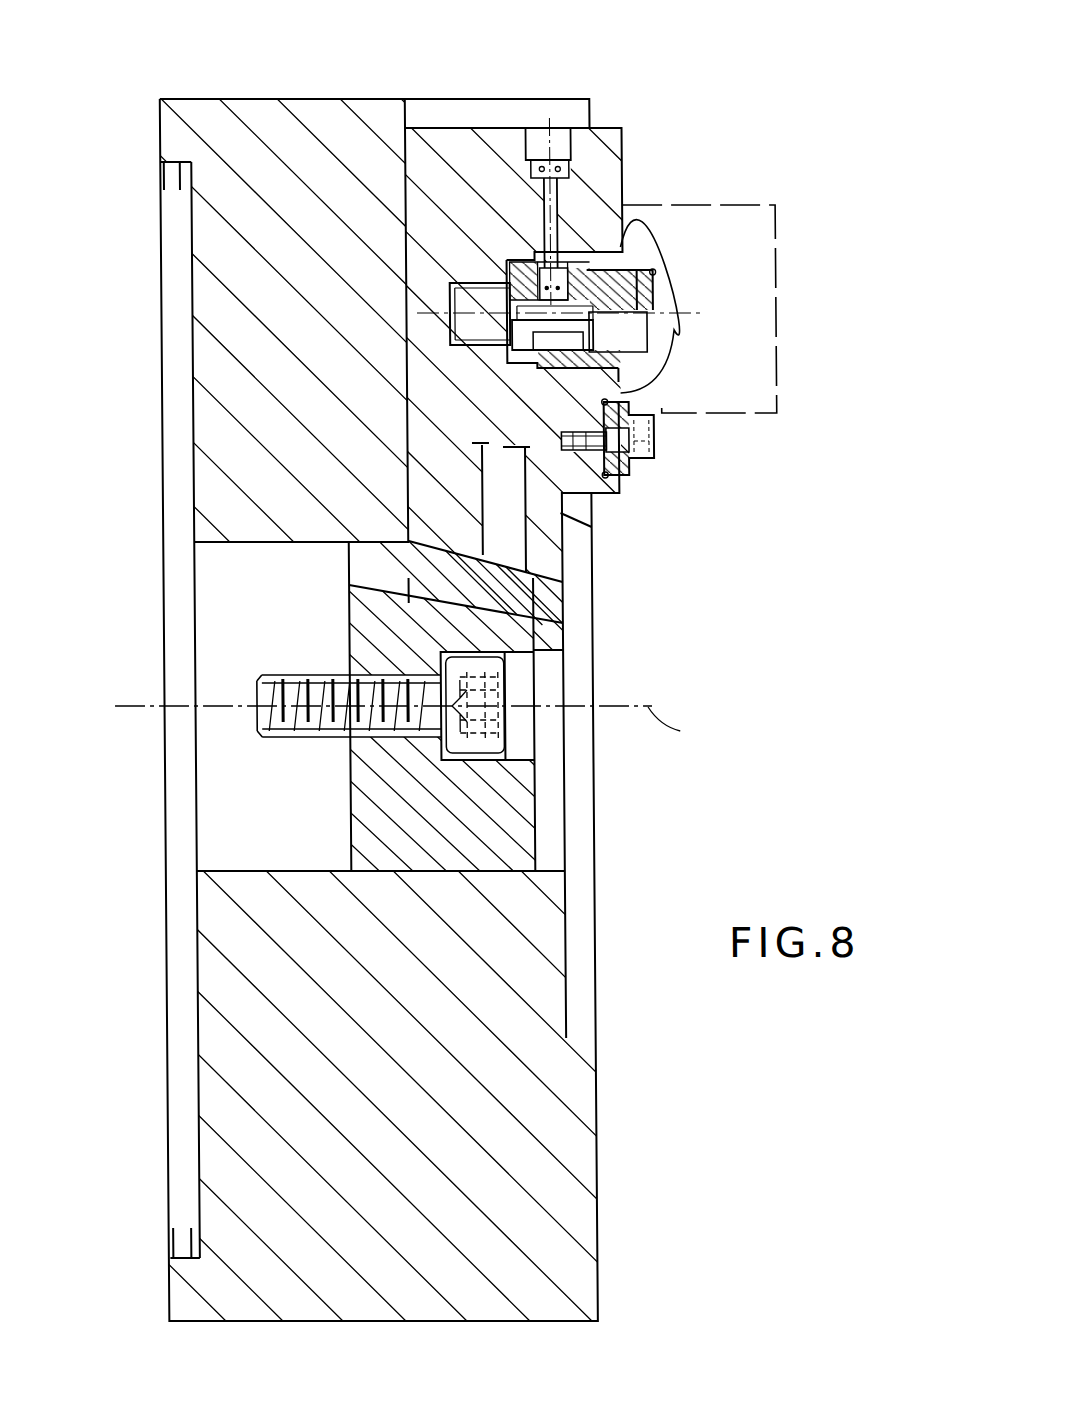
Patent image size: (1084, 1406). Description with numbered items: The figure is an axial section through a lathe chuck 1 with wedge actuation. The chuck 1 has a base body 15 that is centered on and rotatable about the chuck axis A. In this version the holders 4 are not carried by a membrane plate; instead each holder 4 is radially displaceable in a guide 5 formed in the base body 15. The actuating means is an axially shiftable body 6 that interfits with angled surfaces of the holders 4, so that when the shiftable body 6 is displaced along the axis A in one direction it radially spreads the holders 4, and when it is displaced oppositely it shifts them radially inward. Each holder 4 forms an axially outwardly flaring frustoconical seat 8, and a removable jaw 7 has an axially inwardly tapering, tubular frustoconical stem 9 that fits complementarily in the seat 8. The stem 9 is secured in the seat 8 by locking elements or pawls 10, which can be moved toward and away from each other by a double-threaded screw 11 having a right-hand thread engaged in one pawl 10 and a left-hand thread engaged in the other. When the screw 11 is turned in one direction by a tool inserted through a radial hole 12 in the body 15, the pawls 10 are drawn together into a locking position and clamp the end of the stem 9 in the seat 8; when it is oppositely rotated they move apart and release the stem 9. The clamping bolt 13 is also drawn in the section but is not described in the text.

The chuck 1 is at (893, 1170).
The holder 4 is at (427, 223).
The guide 5 is at (478, 512).
The axially shiftable body 6 is at (612, 167).
The removable jaw 7 is at (760, 233).
The frustoconical seat 8 is at (653, 471).
The stem 9 is at (648, 220).
The pawl 10 is at (585, 282).
The double-threaded screw 11 is at (667, 357).
The radial hole 12 is at (556, 130).
The clamping bolt 13 is at (381, 706).
The base body 15 is at (260, 995).
The chuck axis A is at (410, 731).